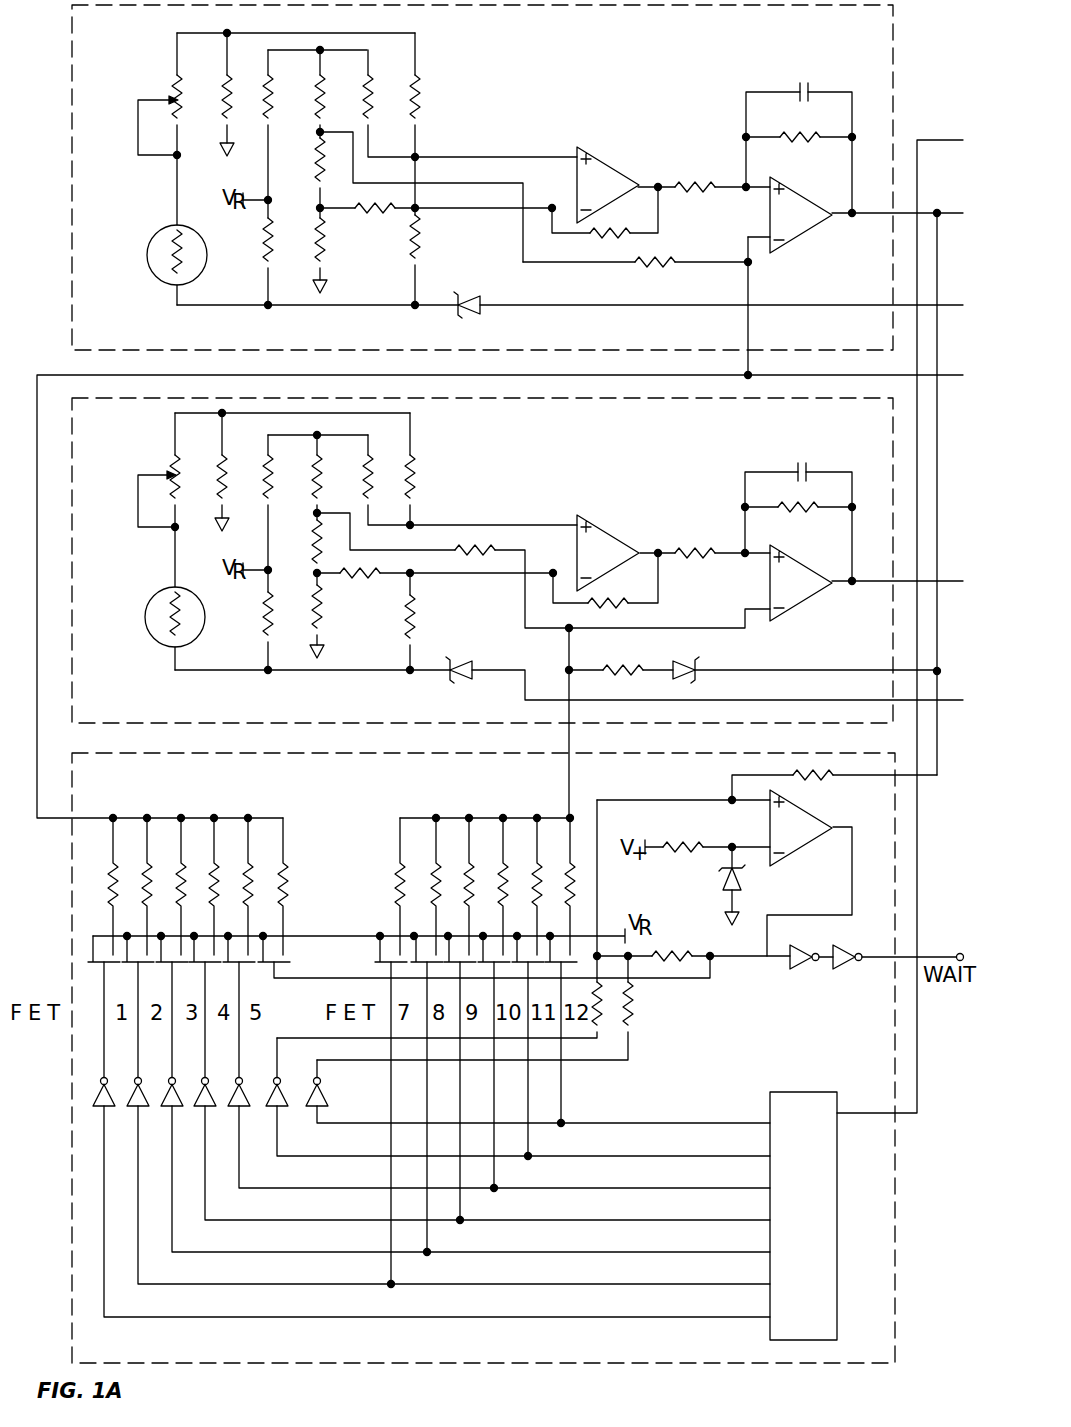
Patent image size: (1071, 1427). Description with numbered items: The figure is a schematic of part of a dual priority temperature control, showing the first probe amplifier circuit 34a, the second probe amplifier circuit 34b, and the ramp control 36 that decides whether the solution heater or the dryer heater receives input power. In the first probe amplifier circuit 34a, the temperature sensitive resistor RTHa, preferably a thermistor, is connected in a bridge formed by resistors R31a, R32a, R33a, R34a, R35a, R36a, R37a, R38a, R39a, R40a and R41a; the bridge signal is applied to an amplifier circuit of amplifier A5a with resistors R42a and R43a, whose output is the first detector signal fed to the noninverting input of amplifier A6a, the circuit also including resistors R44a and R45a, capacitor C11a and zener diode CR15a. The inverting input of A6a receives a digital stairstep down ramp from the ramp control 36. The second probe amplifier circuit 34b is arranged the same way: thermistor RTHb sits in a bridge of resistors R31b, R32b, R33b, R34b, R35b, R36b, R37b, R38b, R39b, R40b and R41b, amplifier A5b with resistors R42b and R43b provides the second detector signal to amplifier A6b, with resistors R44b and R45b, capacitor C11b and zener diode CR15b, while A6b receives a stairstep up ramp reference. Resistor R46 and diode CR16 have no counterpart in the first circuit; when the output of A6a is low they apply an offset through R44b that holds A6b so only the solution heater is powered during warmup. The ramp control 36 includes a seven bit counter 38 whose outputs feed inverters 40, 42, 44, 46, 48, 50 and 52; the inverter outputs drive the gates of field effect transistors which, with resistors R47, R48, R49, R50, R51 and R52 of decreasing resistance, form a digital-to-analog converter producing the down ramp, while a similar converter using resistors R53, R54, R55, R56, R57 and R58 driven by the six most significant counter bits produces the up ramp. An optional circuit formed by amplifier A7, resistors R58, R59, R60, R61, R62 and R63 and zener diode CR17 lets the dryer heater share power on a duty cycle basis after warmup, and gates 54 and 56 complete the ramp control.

The first probe amplifier circuit 34a is at (895, 84).
The second probe amplifier circuit 34b is at (150, 725).
The ramp control 36 is at (72, 1179).
The counter 38 is at (838, 1309).
The inverter 40 is at (98, 1107).
The inverter 42 is at (135, 1109).
The inverter 44 is at (170, 1109).
The inverter 46 is at (203, 1109).
The inverter 48 is at (237, 1109).
The inverter 50 is at (275, 1109).
The inverter 52 is at (322, 1099).
The gate 54 is at (798, 969).
The gate 56 is at (850, 969).
The resistor R31a is at (172, 92).
The resistor R32a is at (222, 82).
The resistor R33a is at (266, 118).
The resistor R34a is at (266, 246).
The resistor R35a is at (325, 115).
The resistor R36a is at (354, 171).
The resistor R37a is at (322, 259).
The resistor R38a is at (372, 95).
The resistor R39a is at (388, 214).
The resistor R40a is at (420, 100).
The resistor R41a is at (420, 248).
The resistor R42a is at (613, 243).
The resistor R43a is at (704, 169).
The resistor R44a is at (673, 270).
The resistor R45a is at (799, 161).
The temperature sensitive resistor RTHa is at (147, 243).
The zener diode CR15a is at (477, 299).
The amplifier A5a is at (618, 139).
The amplifier A6a is at (798, 233).
The capacitor C11a is at (801, 87).
The resistor R31b is at (170, 468).
The resistor R32b is at (218, 460).
The resistor R33b is at (265, 495).
The resistor R34b is at (266, 626).
The resistor R35b is at (322, 476).
The resistor R36b is at (315, 549).
The resistor R37b is at (320, 619).
The resistor R38b is at (372, 486).
The resistor R39b is at (378, 579).
The resistor R40b is at (414, 501).
The resistor R41b is at (416, 619).
The resistor R42b is at (632, 606).
The resistor R43b is at (705, 535).
The resistor R44b is at (472, 548).
The resistor R45b is at (818, 501).
The temperature responsive resistor RTHb is at (145, 623).
The zener diode CR15b is at (469, 669).
The diode CR16 is at (698, 656).
The amplifier A5b is at (600, 528).
The amplifier A6b is at (798, 601).
The capacitor C11b is at (799, 467).
The resistor R46 is at (618, 672).
The resistor R47 is at (110, 880).
The resistor R48 is at (145, 875).
The resistor R49 is at (180, 880).
The resistor R50 is at (213, 875).
The resistor R51 is at (246, 880).
The resistor R52 is at (285, 880).
The resistor R53 is at (398, 890).
The resistor R54 is at (433, 880).
The resistor R55 is at (467, 880).
The resistor R56 is at (500, 880).
The resistor R57 is at (533, 880).
The resistor R58 is at (574, 875).
The resistor R59 is at (602, 1019).
The resistor R60 is at (634, 1009).
The resistor R61 is at (668, 957).
The resistor R62 is at (693, 842).
The resistor R63 is at (808, 781).
The zener diode CR17 is at (722, 879).
The amplifier A7 is at (790, 849).